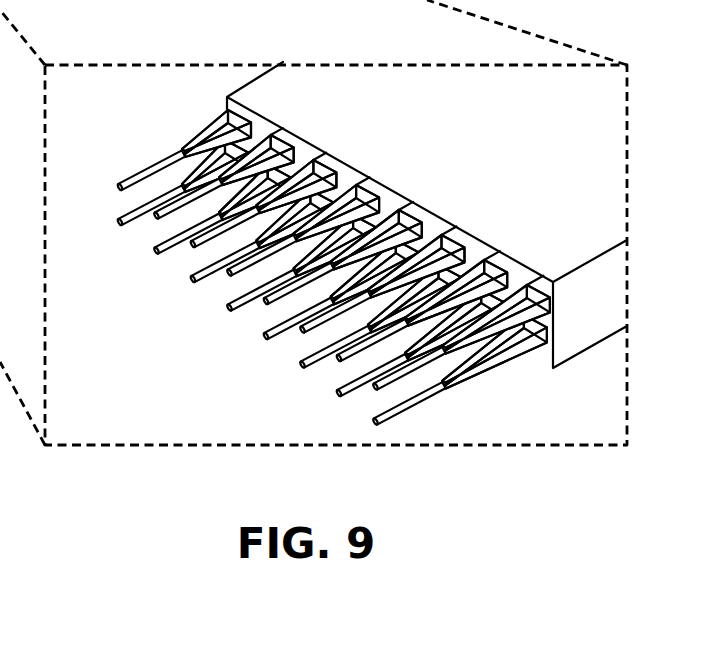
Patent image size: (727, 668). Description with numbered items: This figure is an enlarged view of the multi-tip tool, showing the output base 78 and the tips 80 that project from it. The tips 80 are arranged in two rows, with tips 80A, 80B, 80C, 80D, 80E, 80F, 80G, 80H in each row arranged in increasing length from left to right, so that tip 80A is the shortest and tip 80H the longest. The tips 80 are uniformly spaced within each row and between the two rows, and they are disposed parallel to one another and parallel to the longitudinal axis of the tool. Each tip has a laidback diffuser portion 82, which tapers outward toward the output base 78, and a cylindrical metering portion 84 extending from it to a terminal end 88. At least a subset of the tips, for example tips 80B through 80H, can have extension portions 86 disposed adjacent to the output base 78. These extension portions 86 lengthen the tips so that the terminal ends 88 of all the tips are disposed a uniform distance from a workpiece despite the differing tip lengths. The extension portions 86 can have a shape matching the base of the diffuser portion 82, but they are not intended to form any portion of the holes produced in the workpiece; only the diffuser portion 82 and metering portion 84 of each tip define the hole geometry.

The output base 78 is at (518, 284).
The tips 80 is at (337, 263).
The tip 80A is at (193, 122).
The tip 80B is at (289, 141).
The tip 80C is at (335, 165).
The tip 80D is at (360, 185).
The tip 80E is at (402, 210).
The tip 80F is at (445, 235).
The tip 80G is at (519, 283).
The tip 80H is at (472, 392).
The diffuser portion 82 is at (197, 130).
The metering portion 84 is at (128, 176).
The extension portions 86 is at (527, 374).
The terminal ends 88 is at (377, 423).